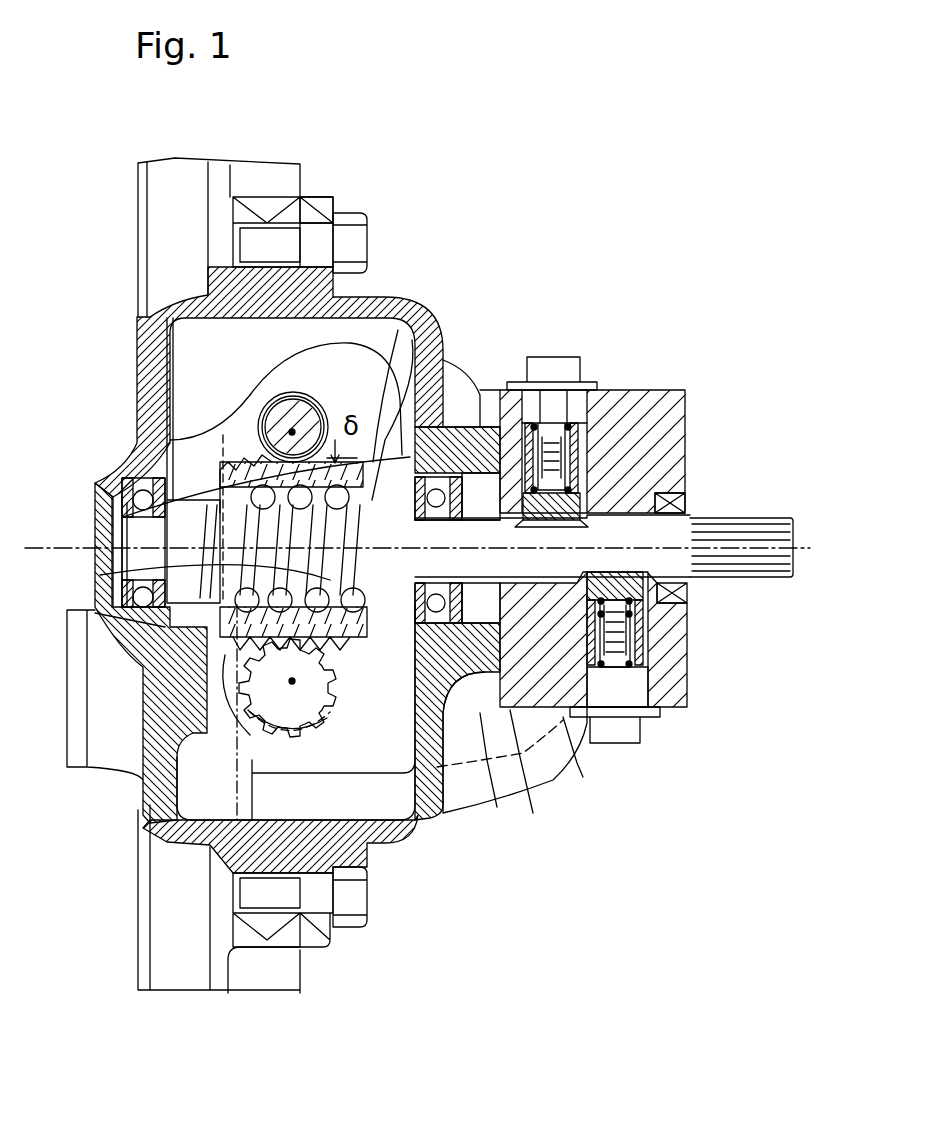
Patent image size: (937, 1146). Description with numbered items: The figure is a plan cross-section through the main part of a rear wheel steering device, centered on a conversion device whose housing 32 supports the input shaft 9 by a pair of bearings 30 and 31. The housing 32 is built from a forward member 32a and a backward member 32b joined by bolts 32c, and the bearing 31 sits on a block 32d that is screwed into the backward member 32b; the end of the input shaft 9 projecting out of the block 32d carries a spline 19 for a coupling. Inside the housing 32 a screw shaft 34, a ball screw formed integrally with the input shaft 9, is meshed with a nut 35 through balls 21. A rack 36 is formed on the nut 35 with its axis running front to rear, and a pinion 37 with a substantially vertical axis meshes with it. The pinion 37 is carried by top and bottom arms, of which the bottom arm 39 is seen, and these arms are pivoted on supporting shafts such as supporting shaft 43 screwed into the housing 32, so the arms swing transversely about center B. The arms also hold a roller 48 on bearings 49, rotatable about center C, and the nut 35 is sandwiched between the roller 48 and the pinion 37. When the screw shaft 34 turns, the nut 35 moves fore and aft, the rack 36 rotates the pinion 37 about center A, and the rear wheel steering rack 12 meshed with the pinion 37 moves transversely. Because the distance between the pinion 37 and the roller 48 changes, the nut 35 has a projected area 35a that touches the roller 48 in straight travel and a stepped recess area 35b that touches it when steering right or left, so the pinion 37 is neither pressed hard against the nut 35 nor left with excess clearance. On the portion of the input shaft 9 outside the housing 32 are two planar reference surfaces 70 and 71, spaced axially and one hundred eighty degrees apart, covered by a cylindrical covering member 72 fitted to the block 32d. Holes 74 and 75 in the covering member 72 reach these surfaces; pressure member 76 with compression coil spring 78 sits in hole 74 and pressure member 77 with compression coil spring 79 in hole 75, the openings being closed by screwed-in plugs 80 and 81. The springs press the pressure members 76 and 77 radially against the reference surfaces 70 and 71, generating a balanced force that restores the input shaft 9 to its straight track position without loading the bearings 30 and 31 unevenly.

The input shaft 9 is at (635, 528).
The rear wheel steering rack 12 is at (180, 792).
The spline 19 is at (755, 530).
The balls 21 is at (130, 523).
The bearing 30 is at (138, 498).
The bearing 31 is at (437, 495).
The housing 32 is at (243, 287).
The forward member 32a is at (272, 212).
The backward member 32b is at (320, 197).
The bolts 32c is at (357, 243).
The block 32d is at (453, 723).
The screw shaft 34 is at (125, 572).
The nut 35 is at (235, 472).
The projected area 35a is at (335, 352).
The recess area 35b is at (428, 357).
The rack 36 is at (345, 648).
The pinion 37 is at (317, 655).
The bottom arm 39 is at (405, 817).
The supporting shaft 43 is at (497, 807).
The roller 48 is at (275, 413).
The bearings 49 is at (268, 398).
The reference surface 70 is at (635, 457).
The reference surface 71 is at (662, 605).
The covering member 72 is at (677, 413).
The hole 74 is at (600, 412).
The hole 75 is at (643, 650).
The pressure member 76 is at (492, 425).
The pressure member 77 is at (583, 777).
The compression coil spring 78 is at (535, 425).
The compression coil spring 79 is at (650, 707).
The plug 80 is at (568, 368).
The plug 81 is at (608, 695).
The center of rotation A is at (292, 684).
The center of swing B is at (533, 813).
The center of rotation C is at (293, 430).